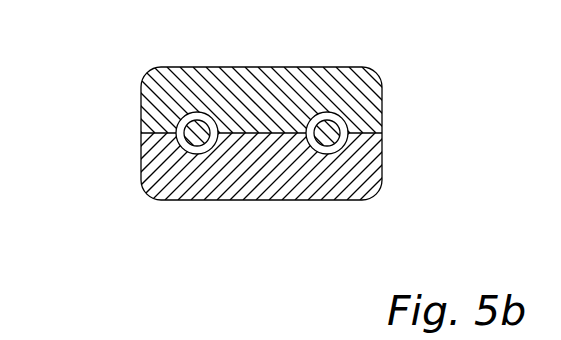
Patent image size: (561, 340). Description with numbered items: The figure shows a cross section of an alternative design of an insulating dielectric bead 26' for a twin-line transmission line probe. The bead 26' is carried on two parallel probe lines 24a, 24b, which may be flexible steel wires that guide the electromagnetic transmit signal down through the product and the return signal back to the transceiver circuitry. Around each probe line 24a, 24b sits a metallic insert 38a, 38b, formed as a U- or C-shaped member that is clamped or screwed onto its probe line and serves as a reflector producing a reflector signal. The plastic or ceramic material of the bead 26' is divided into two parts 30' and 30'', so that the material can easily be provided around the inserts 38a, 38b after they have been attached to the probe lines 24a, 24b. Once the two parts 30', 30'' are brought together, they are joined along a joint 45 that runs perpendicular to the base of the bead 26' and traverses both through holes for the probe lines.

The insulating dielectric bead 26' is at (209, 122).
The first part of plastic or ceramic material 30' is at (258, 73).
The second part of plastic or ceramic material 30'' is at (257, 195).
The first probe line 24a is at (201, 130).
The second probe line 24b is at (329, 130).
The first metallic insert 38a is at (202, 155).
The second metallic insert 38b is at (337, 150).
The joint 45 is at (287, 133).